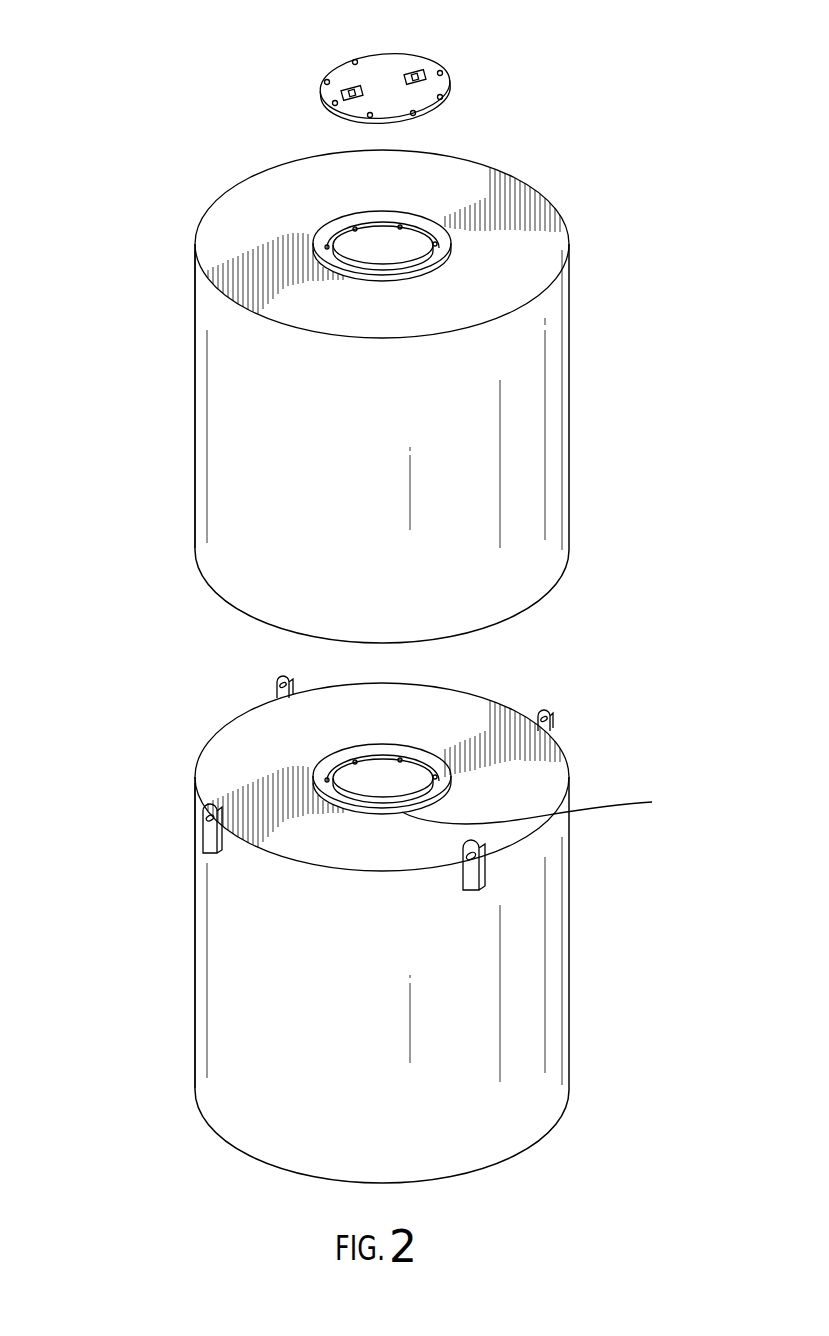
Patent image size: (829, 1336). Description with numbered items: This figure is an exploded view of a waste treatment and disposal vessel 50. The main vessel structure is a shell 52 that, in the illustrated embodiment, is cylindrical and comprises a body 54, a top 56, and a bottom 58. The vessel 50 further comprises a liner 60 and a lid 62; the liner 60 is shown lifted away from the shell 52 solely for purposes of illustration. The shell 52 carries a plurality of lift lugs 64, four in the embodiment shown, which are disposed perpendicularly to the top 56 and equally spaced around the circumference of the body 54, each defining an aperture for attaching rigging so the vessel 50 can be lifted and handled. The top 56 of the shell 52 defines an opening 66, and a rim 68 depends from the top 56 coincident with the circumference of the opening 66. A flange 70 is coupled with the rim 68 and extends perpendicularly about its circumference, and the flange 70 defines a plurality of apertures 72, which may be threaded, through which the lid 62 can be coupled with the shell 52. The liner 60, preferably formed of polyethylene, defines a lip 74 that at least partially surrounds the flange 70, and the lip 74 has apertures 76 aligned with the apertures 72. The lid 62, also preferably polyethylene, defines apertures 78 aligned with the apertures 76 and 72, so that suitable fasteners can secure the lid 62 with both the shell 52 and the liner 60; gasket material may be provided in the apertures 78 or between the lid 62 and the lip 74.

The vessel 50 is at (130, 425).
The shell 52 is at (423, 920).
The body 54 is at (197, 1012).
The top 56 is at (548, 790).
The bottom 58 is at (530, 1145).
The liner 60 is at (535, 312).
The lid 62 is at (448, 95).
The lift lugs 64 is at (558, 735).
The opening 66 is at (540, 803).
The rim 68 is at (355, 760).
The flange 70 is at (440, 773).
The apertures 72 is at (400, 758).
The lip 74 is at (442, 247).
The apertures 76 is at (355, 225).
The apertures 78 is at (395, 62).